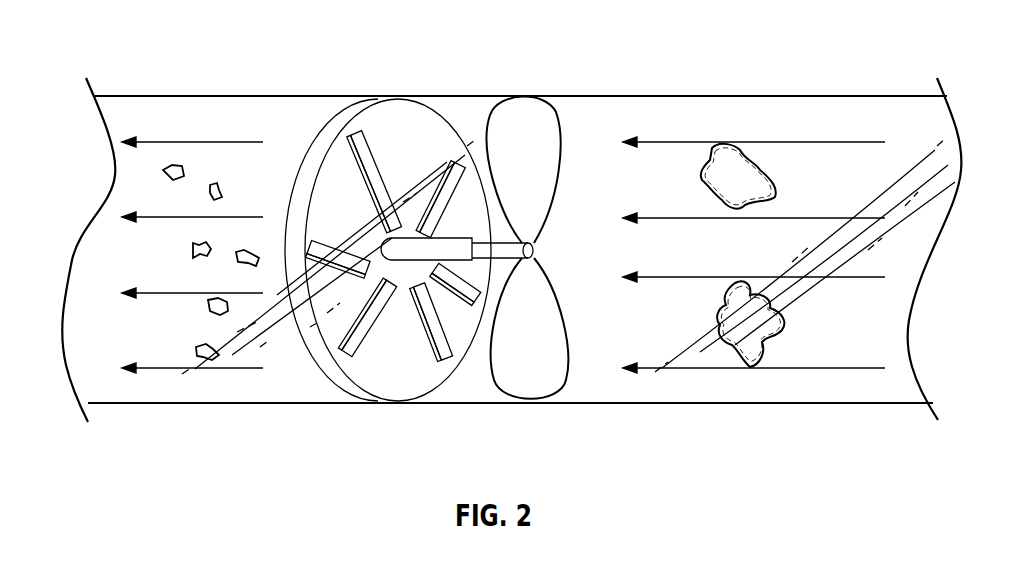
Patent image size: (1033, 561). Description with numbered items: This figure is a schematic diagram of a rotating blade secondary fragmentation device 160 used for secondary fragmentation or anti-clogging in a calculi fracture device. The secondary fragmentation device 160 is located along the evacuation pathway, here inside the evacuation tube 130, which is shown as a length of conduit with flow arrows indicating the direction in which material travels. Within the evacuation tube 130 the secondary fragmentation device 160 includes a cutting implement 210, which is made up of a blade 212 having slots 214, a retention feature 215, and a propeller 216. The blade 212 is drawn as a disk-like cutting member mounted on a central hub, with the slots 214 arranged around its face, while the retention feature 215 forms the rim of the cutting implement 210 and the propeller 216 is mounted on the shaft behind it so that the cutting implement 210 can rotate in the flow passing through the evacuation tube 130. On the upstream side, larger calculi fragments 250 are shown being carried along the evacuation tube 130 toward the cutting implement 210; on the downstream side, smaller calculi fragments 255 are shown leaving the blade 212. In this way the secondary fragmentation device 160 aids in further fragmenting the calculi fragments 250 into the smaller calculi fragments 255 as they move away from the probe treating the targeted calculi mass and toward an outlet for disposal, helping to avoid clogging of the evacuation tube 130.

The evacuation tube 130 is at (213, 96).
The rotating blade secondary fragmentation device 160 is at (818, 24).
The cutting implement 210 is at (402, 269).
The blade 212 is at (435, 145).
The slots 214 is at (373, 128).
The retention feature 215 is at (322, 362).
The propeller 216 is at (538, 108).
The calculi fragments 250 is at (782, 192).
The smaller calculi fragments 255 is at (210, 305).